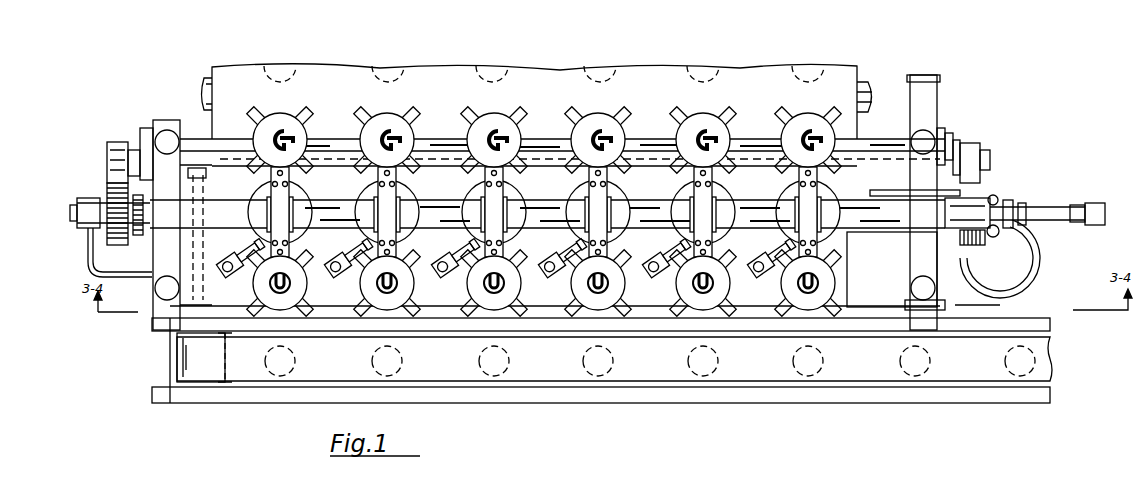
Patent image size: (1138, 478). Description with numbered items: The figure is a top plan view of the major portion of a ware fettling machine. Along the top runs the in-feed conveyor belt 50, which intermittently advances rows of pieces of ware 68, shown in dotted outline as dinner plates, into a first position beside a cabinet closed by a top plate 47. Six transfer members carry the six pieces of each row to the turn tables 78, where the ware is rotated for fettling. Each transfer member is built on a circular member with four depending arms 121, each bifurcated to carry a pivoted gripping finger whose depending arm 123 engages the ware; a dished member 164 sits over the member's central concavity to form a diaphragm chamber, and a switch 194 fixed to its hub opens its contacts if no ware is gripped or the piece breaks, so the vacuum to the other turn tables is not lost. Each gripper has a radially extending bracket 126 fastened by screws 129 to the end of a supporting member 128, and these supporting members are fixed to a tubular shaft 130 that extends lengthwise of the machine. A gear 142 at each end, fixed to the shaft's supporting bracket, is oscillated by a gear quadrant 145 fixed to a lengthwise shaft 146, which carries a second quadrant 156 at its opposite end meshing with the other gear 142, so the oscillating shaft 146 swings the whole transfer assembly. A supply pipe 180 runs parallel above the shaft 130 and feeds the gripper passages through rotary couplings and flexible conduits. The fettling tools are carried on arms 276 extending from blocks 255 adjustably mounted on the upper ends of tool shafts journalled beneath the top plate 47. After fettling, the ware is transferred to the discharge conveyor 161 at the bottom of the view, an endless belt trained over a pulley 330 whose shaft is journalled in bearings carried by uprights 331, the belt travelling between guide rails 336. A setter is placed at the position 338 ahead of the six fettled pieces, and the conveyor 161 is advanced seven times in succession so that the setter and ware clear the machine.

The conveyor belt 50 is at (537, 101).
The pieces of ware 68 is at (398, 75).
The shaft 146 is at (868, 146).
The tubular shaft 130 is at (640, 201).
The quadrant 156 is at (108, 176).
The gear 142 is at (118, 245).
The gear quadrant 145 is at (990, 168).
The supply pipe 180 is at (908, 189).
The top plate 47 is at (943, 263).
The turn tables 78 is at (300, 198).
The screws 129 is at (272, 244).
The bracket 126 is at (404, 250).
The supporting members 128 is at (718, 240).
The arms 276 is at (477, 246).
The blocks 255 is at (664, 270).
The switch 194 is at (292, 141).
The depending arms 121 is at (615, 136).
The depending arm 123 is at (638, 112).
The dished member 164 is at (412, 292).
The guide rails 336 is at (1050, 325).
The discharge conveyor 161 is at (614, 359).
The position 338 is at (935, 361).
The pulley 330 is at (200, 383).
The uprights 331 is at (224, 385).